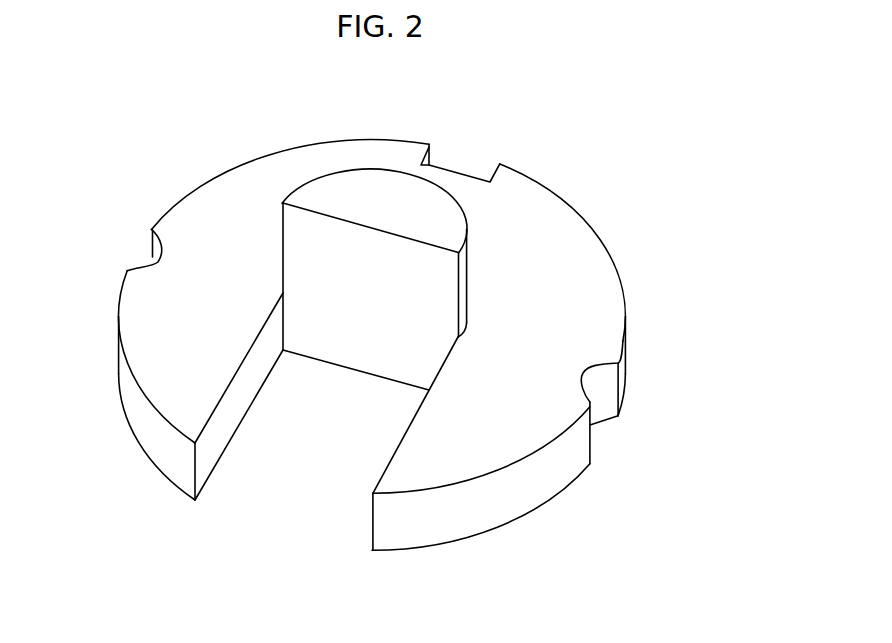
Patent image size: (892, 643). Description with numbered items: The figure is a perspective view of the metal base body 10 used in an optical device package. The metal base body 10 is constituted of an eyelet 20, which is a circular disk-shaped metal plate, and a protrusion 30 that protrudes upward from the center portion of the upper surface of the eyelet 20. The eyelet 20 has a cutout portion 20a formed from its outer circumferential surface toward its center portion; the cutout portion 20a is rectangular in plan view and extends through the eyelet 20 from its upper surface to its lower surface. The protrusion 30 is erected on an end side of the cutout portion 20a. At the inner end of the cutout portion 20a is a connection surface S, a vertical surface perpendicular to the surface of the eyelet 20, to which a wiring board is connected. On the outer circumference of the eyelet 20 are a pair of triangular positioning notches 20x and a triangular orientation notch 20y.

The metal base body 10 is at (716, 192).
The eyelet 20 is at (587, 302).
The cutout portion 20a is at (243, 420).
The positioning notches 20x is at (152, 252).
The orientation notch 20y is at (460, 172).
The protrusion 30 is at (445, 232).
The connection surface S is at (360, 340).